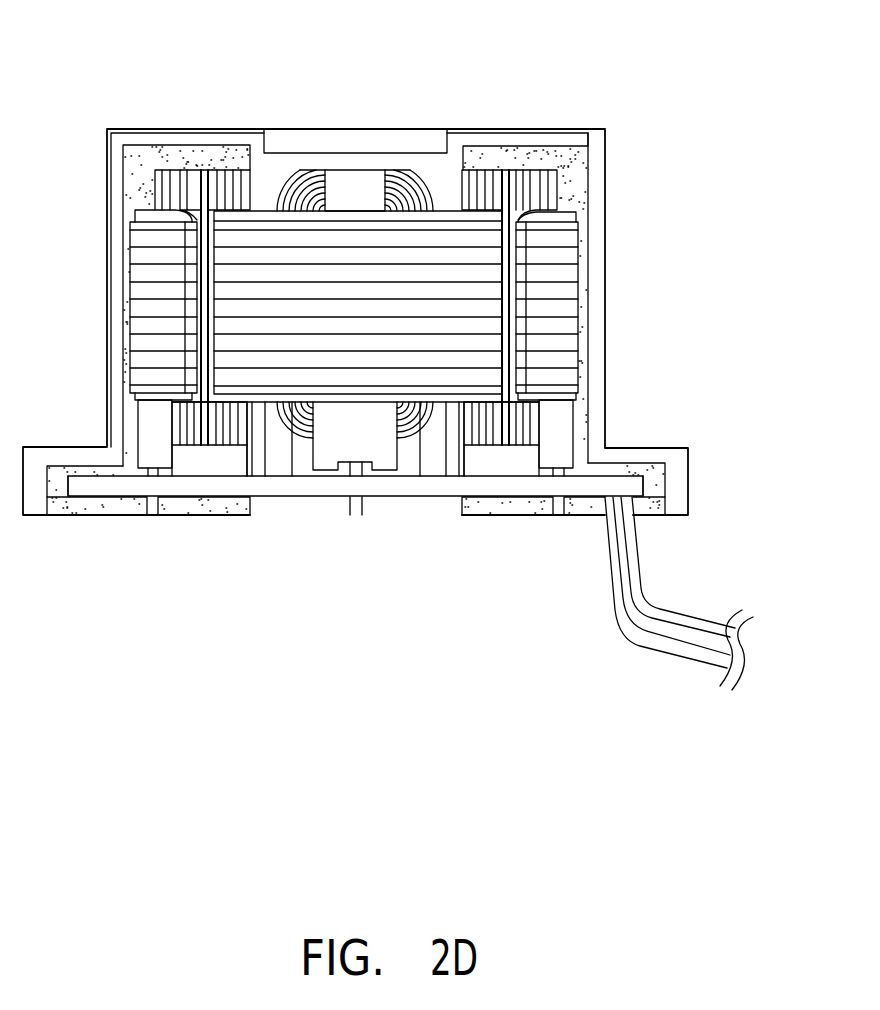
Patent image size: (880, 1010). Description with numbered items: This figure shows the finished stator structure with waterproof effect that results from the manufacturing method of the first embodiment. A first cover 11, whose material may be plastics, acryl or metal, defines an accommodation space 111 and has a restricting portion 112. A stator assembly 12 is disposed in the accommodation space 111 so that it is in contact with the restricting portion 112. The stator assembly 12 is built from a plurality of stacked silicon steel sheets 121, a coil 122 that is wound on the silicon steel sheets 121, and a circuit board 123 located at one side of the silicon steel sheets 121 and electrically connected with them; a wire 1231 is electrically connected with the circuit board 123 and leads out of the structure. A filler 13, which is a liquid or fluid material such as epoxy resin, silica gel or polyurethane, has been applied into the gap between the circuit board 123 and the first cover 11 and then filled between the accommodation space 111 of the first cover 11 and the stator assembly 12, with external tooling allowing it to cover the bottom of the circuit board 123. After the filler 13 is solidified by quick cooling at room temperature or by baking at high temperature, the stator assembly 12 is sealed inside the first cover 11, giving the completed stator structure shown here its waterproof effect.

The first cover 11 is at (355, 260).
The accommodation space 111 is at (134, 157).
The restricting portion 112 is at (263, 152).
The filler 13 is at (230, 150).
The stator assembly 12 is at (785, 185).
The silicon steel sheets 121 is at (553, 292).
The coil 122 is at (537, 197).
The circuit board 123 is at (645, 487).
The wire 1231 is at (704, 623).